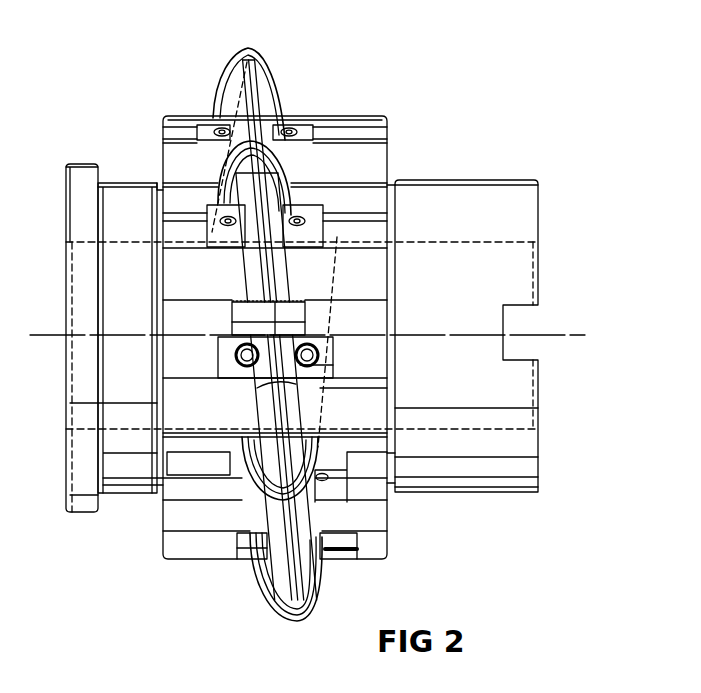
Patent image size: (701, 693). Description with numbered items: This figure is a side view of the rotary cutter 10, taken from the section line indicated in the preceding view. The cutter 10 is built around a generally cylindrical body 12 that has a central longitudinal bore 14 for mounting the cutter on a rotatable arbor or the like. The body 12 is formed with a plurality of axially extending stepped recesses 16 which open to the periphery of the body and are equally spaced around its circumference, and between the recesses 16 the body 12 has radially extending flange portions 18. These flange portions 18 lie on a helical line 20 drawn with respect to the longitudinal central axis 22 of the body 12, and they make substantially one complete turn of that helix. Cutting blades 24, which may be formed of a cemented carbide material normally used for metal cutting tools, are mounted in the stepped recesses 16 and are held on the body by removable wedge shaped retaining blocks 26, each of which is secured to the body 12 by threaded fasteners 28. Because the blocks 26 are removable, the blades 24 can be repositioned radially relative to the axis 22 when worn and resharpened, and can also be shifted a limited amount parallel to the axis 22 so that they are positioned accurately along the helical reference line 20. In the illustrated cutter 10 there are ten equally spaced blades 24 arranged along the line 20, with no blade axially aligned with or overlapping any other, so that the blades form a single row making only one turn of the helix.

The rotary cutter 10 is at (402, 100).
The cylindrical body 12 is at (387, 160).
The central longitudinal bore 14 is at (513, 243).
The stepped recesses 16 is at (371, 336).
The flange portions 18 is at (281, 275).
The helical line 20 is at (237, 116).
The longitudinal central axis 22 is at (560, 335).
The cutting blades 24 is at (232, 67).
The retaining blocks 26 is at (306, 128).
The threaded fasteners 28 is at (307, 343).